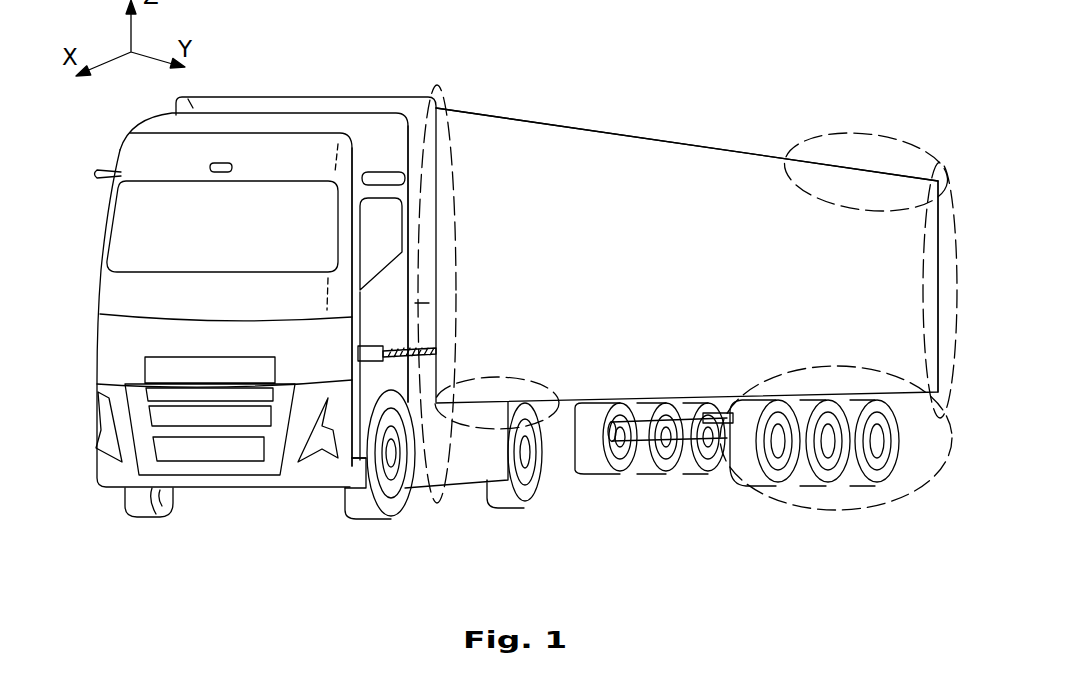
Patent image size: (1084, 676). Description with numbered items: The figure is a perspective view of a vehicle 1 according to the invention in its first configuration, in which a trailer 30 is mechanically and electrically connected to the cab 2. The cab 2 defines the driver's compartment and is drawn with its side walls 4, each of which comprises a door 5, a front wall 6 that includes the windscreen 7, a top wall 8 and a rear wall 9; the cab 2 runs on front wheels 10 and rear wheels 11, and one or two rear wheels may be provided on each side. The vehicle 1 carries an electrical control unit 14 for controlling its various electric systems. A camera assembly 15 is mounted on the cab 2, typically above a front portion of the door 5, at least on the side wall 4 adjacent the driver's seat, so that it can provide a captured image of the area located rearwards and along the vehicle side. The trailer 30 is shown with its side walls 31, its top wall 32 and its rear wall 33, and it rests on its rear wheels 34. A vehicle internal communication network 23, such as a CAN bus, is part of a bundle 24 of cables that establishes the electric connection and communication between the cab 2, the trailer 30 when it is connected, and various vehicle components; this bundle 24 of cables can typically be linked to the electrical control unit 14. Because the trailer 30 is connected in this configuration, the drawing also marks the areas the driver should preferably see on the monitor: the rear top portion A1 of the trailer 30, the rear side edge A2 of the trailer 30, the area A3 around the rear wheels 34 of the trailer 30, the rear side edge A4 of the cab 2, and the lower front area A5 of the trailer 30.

The vehicle 1 is at (737, 62).
The cab 2 is at (100, 142).
The side walls 4 is at (98, 292).
The door 5 is at (386, 328).
The front wall 6 is at (173, 338).
The windscreen 7 is at (163, 232).
The top wall 8 is at (262, 122).
The rear wall 9 is at (440, 224).
The front wheels 10 is at (390, 508).
The rear wheels 11 is at (541, 502).
The electrical control unit 14 is at (358, 354).
The camera assembly 15 is at (383, 171).
The vehicle internal communication network 23 is at (436, 345).
The bundle of cables 24 is at (417, 335).
The trailer 30 is at (730, 145).
The side walls 31 is at (661, 292).
The top wall 32 is at (620, 136).
The rear wall 33 is at (945, 265).
The rear wheels 34 is at (808, 490).
The rear top portion of the trailer A1 is at (840, 134).
The rear side edge of the trailer A2 is at (921, 166).
The area around the rear wheels of the trailer A3 is at (922, 483).
The rear side edge of the cab A4 is at (440, 97).
The lower front area of the trailer A5 is at (547, 412).